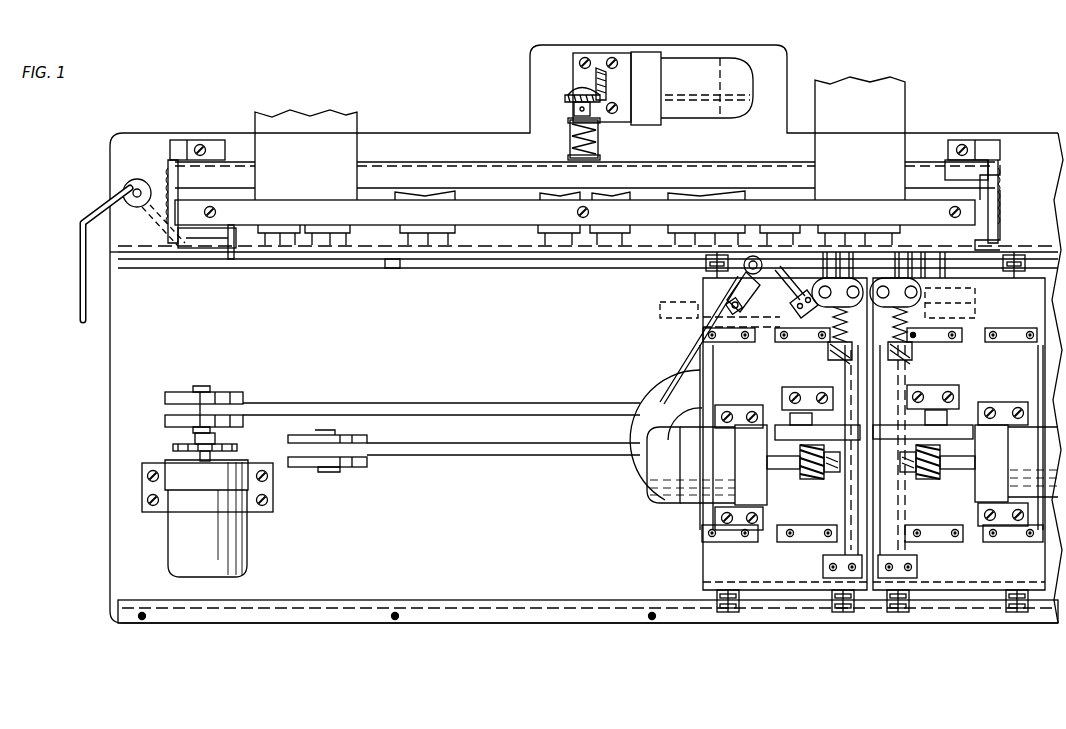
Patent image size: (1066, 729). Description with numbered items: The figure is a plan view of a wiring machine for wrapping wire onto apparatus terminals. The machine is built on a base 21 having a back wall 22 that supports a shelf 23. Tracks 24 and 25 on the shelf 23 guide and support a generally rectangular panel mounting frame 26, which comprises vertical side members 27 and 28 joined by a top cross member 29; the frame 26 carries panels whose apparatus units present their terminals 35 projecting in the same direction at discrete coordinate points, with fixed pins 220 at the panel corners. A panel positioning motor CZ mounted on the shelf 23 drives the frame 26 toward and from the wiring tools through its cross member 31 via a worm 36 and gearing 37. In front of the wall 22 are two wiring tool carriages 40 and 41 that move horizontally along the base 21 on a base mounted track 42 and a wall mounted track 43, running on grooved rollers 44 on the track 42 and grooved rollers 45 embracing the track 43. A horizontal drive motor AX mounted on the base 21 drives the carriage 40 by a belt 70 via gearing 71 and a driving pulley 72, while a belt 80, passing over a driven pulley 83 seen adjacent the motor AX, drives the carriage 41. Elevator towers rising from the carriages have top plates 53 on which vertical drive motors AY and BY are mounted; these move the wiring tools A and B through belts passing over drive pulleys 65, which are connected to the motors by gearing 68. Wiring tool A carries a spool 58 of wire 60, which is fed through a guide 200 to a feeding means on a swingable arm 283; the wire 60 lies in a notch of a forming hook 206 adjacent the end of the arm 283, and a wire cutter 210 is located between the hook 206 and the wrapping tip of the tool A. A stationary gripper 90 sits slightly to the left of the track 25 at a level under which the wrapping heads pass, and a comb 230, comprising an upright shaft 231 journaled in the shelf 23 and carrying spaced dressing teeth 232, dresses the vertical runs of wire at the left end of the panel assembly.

The base 21 is at (109, 440).
The back wall 22 is at (108, 254).
The shelf 23 is at (159, 135).
The track 24 is at (218, 145).
The track 25 is at (987, 140).
The panel mounting frame 26 is at (585, 138).
The vertical side member 27 is at (182, 252).
The vertical side member 28 is at (1000, 238).
The top cross member 29 is at (364, 212).
The cross member 31 is at (674, 175).
The terminals 35 is at (450, 237).
The worm 36 is at (569, 145).
The gearing 37 is at (585, 100).
The wiring tool carriage 40 is at (757, 452).
The wiring tool carriage 41 is at (964, 452).
The base mounted track 42 is at (178, 603).
The wall mounted track 43 is at (162, 262).
The grooved rollers 44 is at (722, 614).
The grooved rollers 45 is at (706, 266).
The top plates 53 is at (781, 510).
The spool 58 is at (660, 402).
The wire 60 is at (680, 355).
The drive pulleys 65 is at (780, 422).
The gearing 68 is at (826, 472).
The belt 70 is at (308, 406).
The gearing 71 is at (240, 447).
The driving pulley 72 is at (238, 400).
The belt 80 is at (426, 458).
The driven pulley 83 is at (355, 456).
The stationary gripper 90 is at (944, 284).
The guide 200 is at (700, 297).
The forming hook 206 is at (752, 256).
The wire cutter 210 is at (790, 270).
The fixed pins 220 is at (235, 260).
The comb 230 is at (86, 234).
The upright shaft 231 is at (135, 191).
The dressing teeth 232 is at (80, 258).
The swingable arm 283 is at (758, 302).
The wiring tool A is at (828, 555).
The wiring tool B is at (912, 557).
The horizontal drive motor AX is at (207, 518).
The vertical drive motor AY is at (707, 467).
The vertical drive motor BY is at (1016, 464).
The panel positioning motor CZ is at (695, 55).